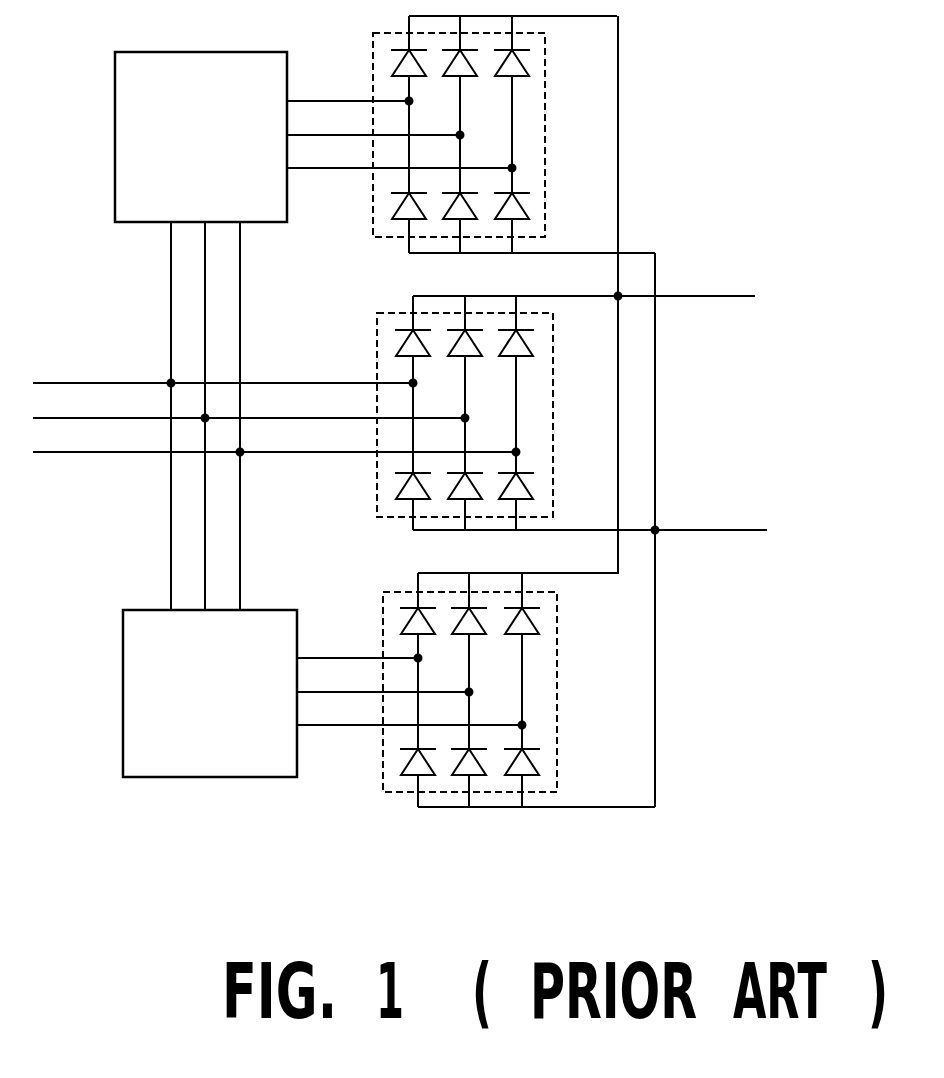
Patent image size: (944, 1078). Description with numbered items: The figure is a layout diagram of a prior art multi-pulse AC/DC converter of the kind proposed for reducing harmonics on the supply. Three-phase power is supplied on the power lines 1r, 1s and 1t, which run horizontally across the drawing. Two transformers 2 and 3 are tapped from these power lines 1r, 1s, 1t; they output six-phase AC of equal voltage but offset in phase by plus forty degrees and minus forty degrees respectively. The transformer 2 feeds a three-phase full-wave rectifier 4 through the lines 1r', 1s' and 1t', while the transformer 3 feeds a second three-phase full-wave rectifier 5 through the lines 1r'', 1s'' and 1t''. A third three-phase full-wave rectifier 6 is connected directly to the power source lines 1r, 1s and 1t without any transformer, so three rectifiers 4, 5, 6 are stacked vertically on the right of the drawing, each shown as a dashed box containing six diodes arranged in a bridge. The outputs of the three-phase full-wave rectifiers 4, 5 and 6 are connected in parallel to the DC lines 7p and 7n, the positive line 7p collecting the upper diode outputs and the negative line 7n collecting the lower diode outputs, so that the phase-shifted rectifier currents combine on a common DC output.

The transformer 2 is at (201, 137).
The transformer 3 is at (210, 693).
The three-phase full-wave rectifier 4 is at (500, 134).
The three-phase full-wave rectifier 5 is at (505, 690).
The three-phase full-wave rectifier 6 is at (450, 413).
The DC line 7p is at (584, 294).
The DC line 7n is at (590, 530).
The power line 1r is at (225, 374).
The power line 1s is at (251, 409).
The power line 1t is at (276, 442).
The line 1r' is at (350, 91).
The line 1s' is at (375, 125).
The line 1t' is at (401, 158).
The line 1r'' is at (359, 649).
The line 1s'' is at (385, 682).
The line 1t'' is at (411, 716).